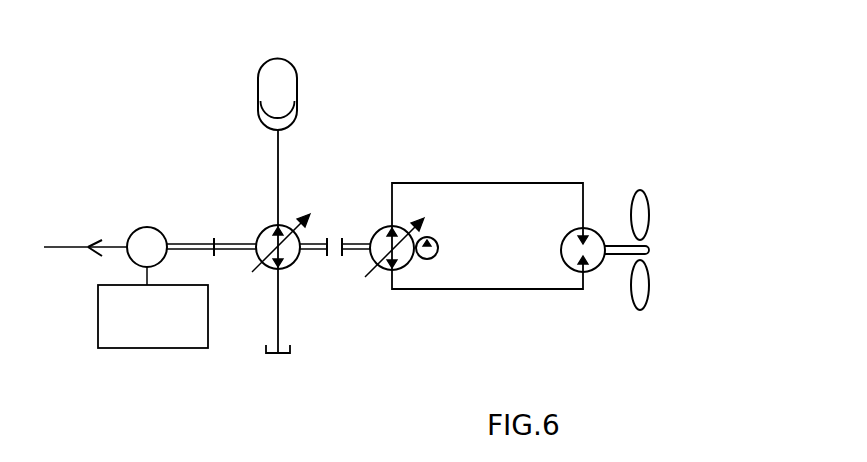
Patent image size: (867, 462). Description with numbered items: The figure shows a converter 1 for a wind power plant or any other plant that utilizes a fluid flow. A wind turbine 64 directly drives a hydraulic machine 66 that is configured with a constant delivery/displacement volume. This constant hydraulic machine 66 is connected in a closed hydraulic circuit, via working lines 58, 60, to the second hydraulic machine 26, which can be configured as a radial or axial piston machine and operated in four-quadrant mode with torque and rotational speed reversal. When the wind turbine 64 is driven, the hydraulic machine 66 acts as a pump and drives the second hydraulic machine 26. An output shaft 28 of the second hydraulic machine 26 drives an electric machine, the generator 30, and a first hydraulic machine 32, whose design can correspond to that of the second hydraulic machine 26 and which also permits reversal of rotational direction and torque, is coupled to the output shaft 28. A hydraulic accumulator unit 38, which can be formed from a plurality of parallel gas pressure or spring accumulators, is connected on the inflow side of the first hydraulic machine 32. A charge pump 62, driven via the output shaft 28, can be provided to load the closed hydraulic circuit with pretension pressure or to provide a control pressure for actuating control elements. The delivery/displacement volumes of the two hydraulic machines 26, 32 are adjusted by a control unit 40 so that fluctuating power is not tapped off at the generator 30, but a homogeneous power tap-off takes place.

The converter 1 is at (355, 140).
The second hydraulic machine 26 is at (380, 232).
The output shaft 28 is at (355, 251).
The generator 30 is at (156, 226).
The first hydraulic machine 32 is at (267, 233).
The hydraulic accumulator unit 38 is at (288, 80).
The control unit 40 is at (208, 316).
The working line 58 is at (471, 183).
The working line 60 is at (468, 290).
The charge pump 62 is at (433, 244).
The wind turbine 64 is at (651, 215).
The hydraulic machine 66 is at (598, 231).